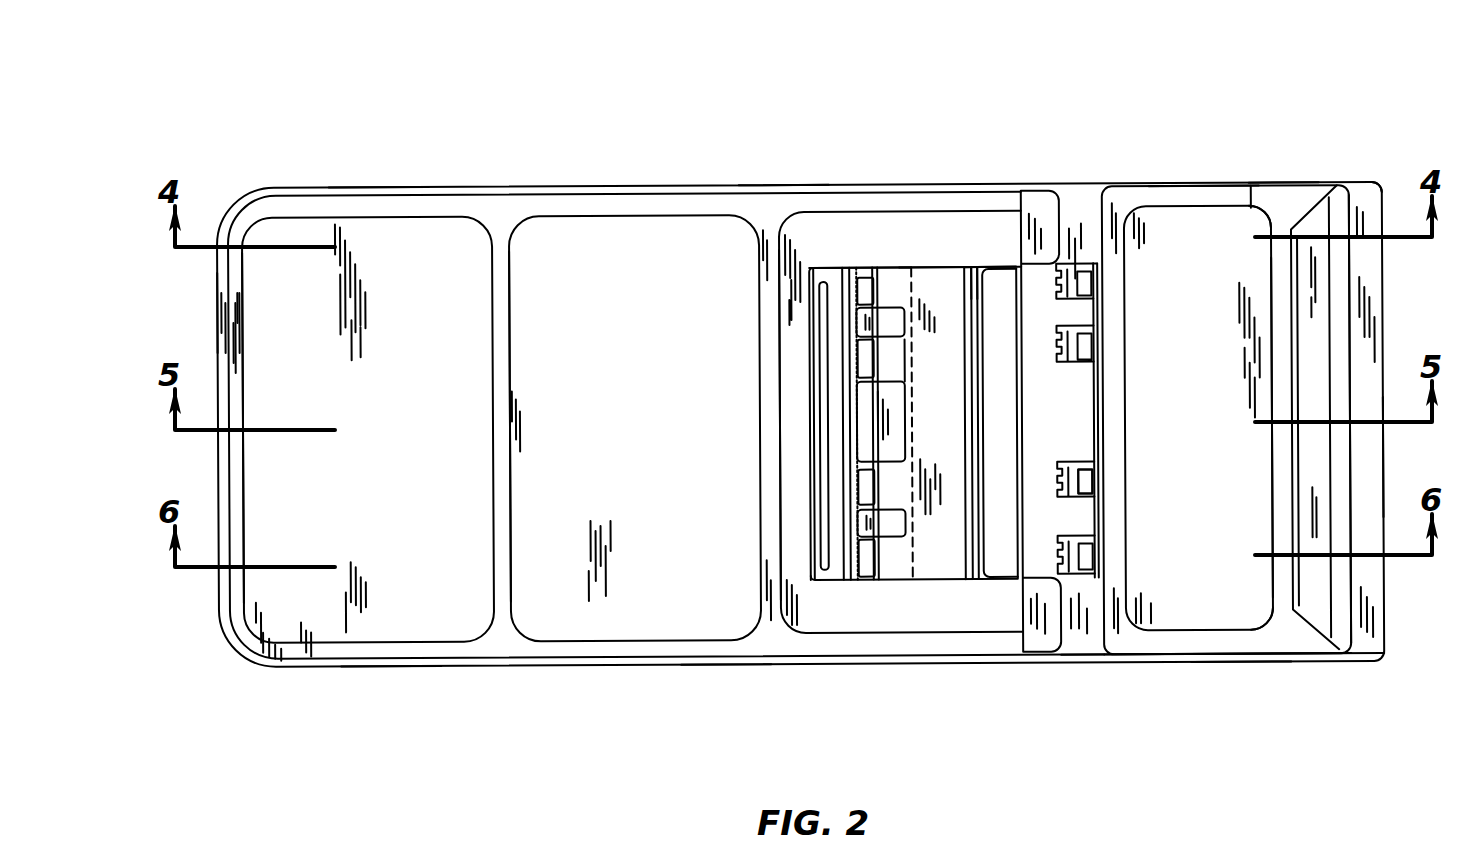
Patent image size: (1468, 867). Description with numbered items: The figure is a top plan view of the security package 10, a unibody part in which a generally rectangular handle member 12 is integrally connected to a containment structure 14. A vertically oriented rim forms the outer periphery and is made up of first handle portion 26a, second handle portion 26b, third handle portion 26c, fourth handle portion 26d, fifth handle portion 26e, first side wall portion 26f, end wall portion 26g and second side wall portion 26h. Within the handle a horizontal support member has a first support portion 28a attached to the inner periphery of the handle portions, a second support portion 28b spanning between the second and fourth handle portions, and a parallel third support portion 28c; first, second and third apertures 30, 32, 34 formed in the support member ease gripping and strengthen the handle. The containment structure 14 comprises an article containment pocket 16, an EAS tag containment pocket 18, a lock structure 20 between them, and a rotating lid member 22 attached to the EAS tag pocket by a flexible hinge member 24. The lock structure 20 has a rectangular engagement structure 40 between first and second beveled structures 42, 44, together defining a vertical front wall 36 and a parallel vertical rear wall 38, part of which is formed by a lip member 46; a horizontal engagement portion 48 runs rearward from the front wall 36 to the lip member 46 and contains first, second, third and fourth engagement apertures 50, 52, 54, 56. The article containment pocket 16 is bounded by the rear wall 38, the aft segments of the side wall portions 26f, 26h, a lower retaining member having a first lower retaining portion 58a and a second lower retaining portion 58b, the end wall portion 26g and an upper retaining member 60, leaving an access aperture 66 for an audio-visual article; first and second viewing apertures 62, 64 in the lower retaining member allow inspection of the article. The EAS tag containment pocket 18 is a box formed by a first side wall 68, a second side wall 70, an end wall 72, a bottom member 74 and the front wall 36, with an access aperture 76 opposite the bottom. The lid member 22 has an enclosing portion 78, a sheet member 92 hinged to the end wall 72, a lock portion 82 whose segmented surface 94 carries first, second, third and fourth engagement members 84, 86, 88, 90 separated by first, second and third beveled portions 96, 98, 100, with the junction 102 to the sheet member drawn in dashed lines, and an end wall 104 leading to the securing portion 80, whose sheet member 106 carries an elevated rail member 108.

The security package 10 is at (636, 146).
The handle member 12 is at (297, 683).
The containment structure 14 is at (1160, 672).
The article containment pocket 16 is at (1364, 180).
The EAS tag containment pocket 18 is at (996, 254).
The lock structure 20 is at (1057, 672).
The lid member 22 is at (898, 232).
The hinge member 24 is at (968, 582).
The first handle portion 26a is at (788, 186).
The second handle portion 26b is at (373, 185).
The third handle portion 26c is at (227, 311).
The fourth handle portion 26d is at (391, 666).
The fifth handle portion 26e is at (723, 666).
The first side wall portion 26f is at (1240, 666).
The end wall portion 26g is at (1385, 466).
The second side wall portion 26h is at (1280, 186).
The first support portion 28a is at (237, 374).
The second support portion 28b is at (510, 358).
The third support portion 28c is at (772, 346).
The first aperture 30 is at (396, 418).
The second aperture 32 is at (626, 418).
The third aperture 34 is at (821, 252).
The front wall 36 is at (1013, 262).
The rear wall 38 is at (1105, 306).
The engagement structure 40 is at (1077, 425).
The first beveled structure 42 is at (1091, 200).
The second beveled structure 44 is at (1088, 668).
The lip member 46 is at (1105, 393).
The engagement portion 48 is at (1062, 456).
The first engagement aperture 50 is at (1086, 540).
The second engagement aperture 52 is at (1092, 490).
The third engagement aperture 54 is at (1100, 350).
The fourth engagement aperture 56 is at (1094, 276).
The first lower retaining portion 58a is at (1253, 212).
The second lower retaining portion 58b is at (1282, 468).
The upper retaining member 60 is at (1385, 304).
The first viewing aperture 62 is at (1228, 356).
The second viewing aperture 64 is at (1330, 320).
The access aperture 66 is at (1211, 207).
The first side wall 68 is at (1010, 265).
The second side wall 70 is at (1018, 582).
The end wall 72 is at (980, 262).
The bottom member 74 is at (1005, 582).
The access aperture 76 is at (990, 582).
The enclosing portion 78 is at (926, 582).
The securing portion 80 is at (828, 582).
The lock portion 82 is at (866, 582).
The first engagement member 84 is at (862, 545).
The second engagement member 86 is at (862, 483).
The third engagement member 88 is at (862, 365).
The fourth engagement member 90 is at (863, 294).
The sheet member 92 is at (947, 430).
The segmented surface 94 is at (905, 358).
The first beveled portion 96 is at (882, 527).
The second beveled portion 98 is at (863, 416).
The third beveled portion 100 is at (893, 318).
The junction 102 is at (902, 274).
The end wall 104 is at (843, 440).
The sheet member 106 is at (832, 566).
The rail member 108 is at (822, 552).